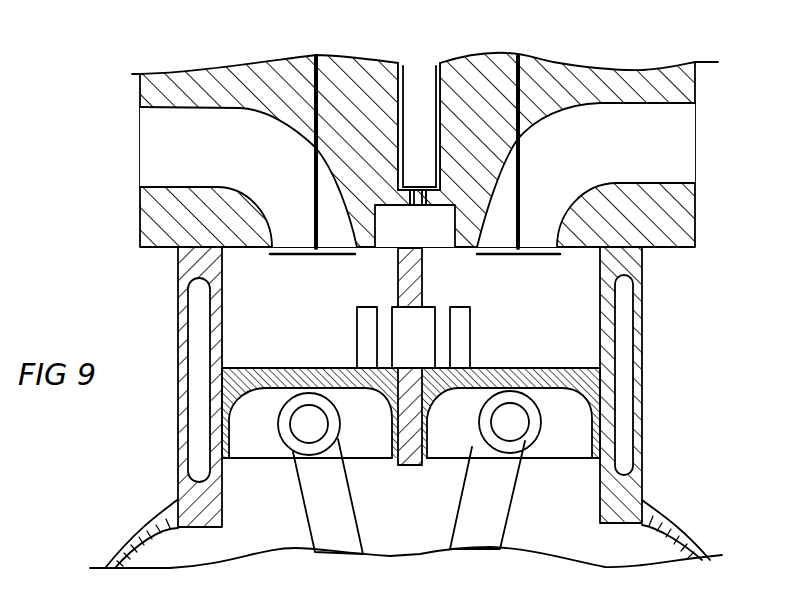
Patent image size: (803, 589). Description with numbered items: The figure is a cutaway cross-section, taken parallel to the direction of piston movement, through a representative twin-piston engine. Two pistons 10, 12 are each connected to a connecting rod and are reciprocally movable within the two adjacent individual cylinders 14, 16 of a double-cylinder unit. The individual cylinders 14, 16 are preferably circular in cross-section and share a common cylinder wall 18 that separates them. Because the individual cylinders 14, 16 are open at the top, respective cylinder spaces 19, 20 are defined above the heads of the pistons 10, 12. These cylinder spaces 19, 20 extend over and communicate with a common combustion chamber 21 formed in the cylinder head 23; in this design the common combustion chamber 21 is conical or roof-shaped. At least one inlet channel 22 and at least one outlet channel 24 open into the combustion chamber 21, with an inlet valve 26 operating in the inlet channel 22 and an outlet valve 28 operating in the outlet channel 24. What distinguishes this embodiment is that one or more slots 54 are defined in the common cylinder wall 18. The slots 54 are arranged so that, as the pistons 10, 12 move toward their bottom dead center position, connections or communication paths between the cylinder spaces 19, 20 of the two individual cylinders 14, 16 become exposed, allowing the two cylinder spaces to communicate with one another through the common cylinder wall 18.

The piston 10 is at (563, 418).
The piston 12 is at (268, 421).
The individual cylinder 14 is at (578, 310).
The individual cylinder 16 is at (245, 310).
The common cylinder wall 18 is at (411, 466).
The cylinder space 19 is at (577, 268).
The cylinder space 20 is at (268, 276).
The common combustion chamber 21 is at (393, 220).
The inlet channel 22 is at (182, 152).
The cylinder head 23 is at (590, 74).
The outlet channel 24 is at (663, 156).
The inlet valve 26 is at (325, 57).
The outlet valve 28 is at (527, 60).
The slot 54 is at (462, 323).